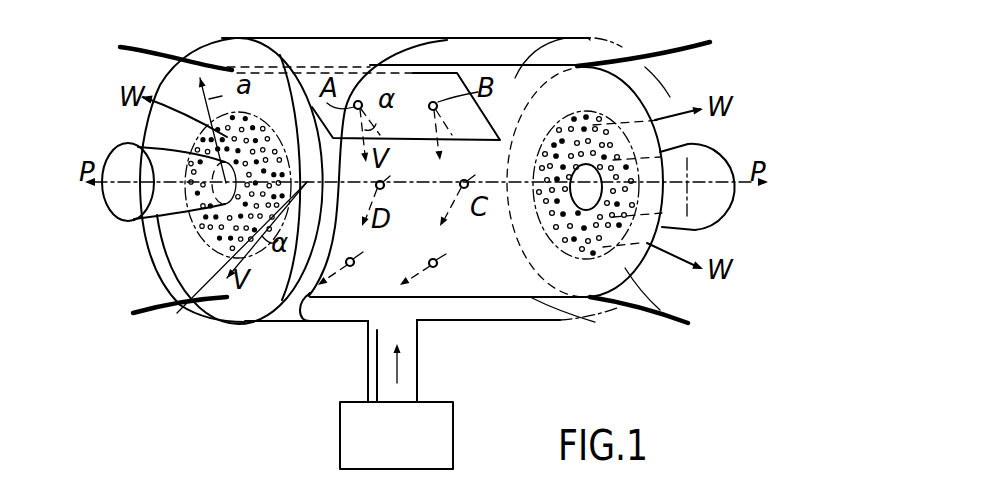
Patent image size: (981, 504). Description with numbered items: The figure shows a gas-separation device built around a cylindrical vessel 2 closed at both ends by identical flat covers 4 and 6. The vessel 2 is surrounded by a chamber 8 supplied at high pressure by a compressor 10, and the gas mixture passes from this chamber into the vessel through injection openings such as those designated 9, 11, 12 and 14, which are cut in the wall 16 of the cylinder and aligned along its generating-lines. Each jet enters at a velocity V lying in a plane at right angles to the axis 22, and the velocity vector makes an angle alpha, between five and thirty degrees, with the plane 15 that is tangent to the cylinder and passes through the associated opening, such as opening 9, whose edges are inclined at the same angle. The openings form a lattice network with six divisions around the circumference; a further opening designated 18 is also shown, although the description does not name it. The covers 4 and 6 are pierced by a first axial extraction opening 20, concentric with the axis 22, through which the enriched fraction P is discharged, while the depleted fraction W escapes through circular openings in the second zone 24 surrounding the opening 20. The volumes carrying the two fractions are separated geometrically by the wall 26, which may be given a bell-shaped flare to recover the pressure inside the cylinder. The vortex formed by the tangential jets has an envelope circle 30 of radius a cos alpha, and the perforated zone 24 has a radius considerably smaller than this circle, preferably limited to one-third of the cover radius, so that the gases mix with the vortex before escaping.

The cylindrical vessel 2 is at (508, 302).
The flat cover 4 is at (213, 80).
The flat cover 6 is at (600, 83).
The chamber 8 is at (530, 38).
The injection opening 9 is at (437, 90).
The compressor 10 is at (414, 455).
The injection opening 11 is at (372, 73).
The injection opening 12 is at (377, 188).
The injection opening 14 is at (464, 176).
The tangent plane 15 is at (517, 121).
The cylinder wall 16 is at (349, 268).
The nozzle 18 is at (433, 270).
The first axial extraction opening 20 is at (158, 266).
The axis of the cylindrical vessel 22 is at (172, 168).
The second zone 24 is at (229, 268).
The wall 26 is at (162, 215).
The envelope circle 30 is at (258, 135).